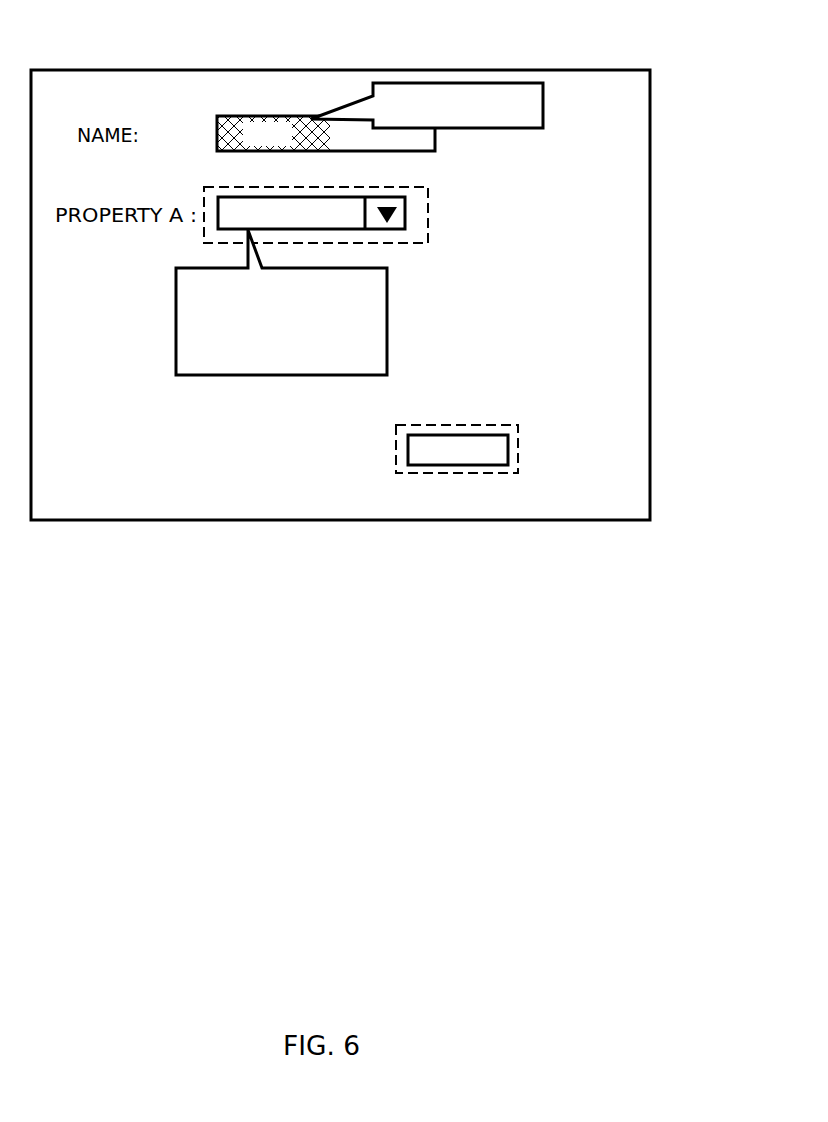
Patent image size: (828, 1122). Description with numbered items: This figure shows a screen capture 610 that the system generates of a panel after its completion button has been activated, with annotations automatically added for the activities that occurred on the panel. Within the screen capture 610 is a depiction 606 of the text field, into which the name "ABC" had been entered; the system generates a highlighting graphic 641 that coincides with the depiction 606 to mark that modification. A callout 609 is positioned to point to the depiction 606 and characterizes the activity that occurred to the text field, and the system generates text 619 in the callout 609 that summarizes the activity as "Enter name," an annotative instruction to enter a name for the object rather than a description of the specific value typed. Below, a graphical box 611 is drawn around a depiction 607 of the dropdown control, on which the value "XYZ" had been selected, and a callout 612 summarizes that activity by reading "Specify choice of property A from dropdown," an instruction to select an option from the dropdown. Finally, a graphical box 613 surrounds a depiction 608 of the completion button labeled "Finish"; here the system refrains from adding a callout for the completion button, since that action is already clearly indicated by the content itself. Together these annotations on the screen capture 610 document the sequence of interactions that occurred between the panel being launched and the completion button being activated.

The highlighting graphic 641 is at (229, 114).
The text 619 is at (463, 98).
The callout 609 is at (545, 100).
The depiction of the text field 606 is at (435, 152).
The depiction of the dropdown control 607 is at (407, 212).
The graphical box 611 is at (428, 243).
The screen capture 610 is at (651, 278).
The callout 612 is at (388, 360).
The graphical box 613 is at (517, 425).
The depiction of the completion button 608 is at (509, 457).